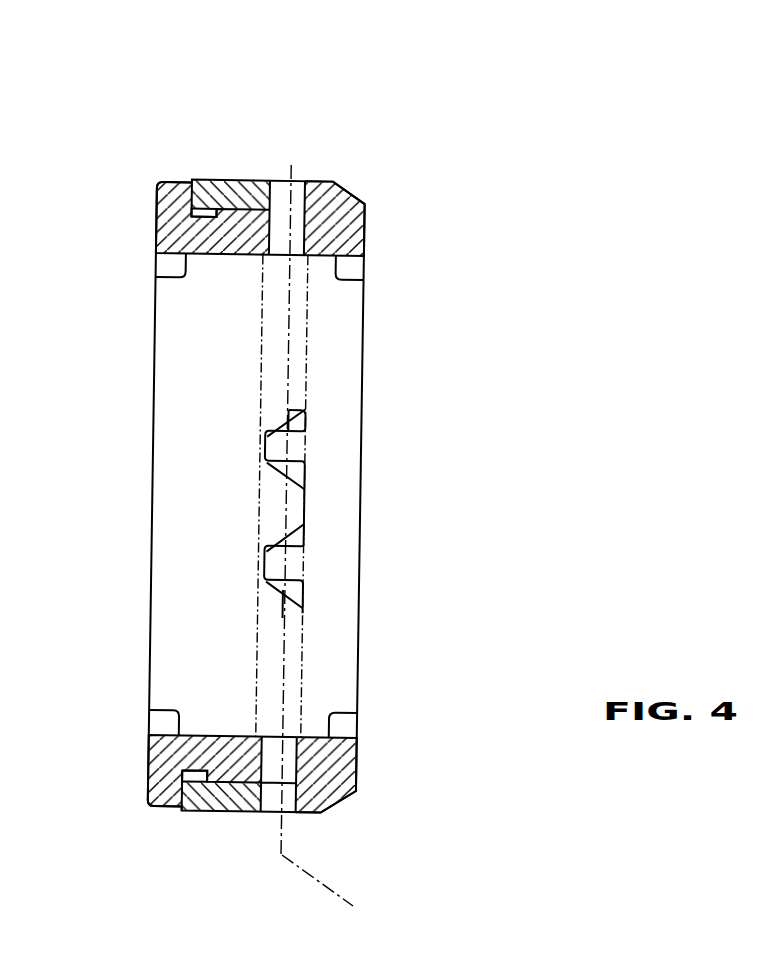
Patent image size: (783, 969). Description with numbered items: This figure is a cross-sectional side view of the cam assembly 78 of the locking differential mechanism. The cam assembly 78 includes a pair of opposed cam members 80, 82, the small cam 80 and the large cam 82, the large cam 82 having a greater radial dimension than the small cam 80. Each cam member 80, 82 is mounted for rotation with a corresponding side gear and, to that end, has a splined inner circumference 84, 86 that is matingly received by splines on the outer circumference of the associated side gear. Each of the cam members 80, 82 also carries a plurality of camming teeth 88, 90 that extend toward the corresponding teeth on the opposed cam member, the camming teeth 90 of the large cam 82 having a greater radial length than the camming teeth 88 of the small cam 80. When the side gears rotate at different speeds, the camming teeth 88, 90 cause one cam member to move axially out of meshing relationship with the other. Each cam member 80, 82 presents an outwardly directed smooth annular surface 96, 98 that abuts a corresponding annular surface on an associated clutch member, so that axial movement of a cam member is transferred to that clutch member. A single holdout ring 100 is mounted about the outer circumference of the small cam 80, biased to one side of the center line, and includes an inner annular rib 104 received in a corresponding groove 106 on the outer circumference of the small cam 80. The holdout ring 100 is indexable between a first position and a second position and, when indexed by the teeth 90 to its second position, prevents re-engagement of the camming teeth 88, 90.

The cam assembly 78 is at (413, 160).
The cam member 80 is at (217, 254).
The cam member 82 is at (322, 260).
The splined inner circumference 84 is at (163, 265).
The splined inner circumference 86 is at (360, 267).
The camming teeth 88 is at (297, 505).
The camming teeth 90 is at (303, 181).
The smooth annular surface 96 is at (157, 222).
The smooth annular surface 98 is at (365, 232).
The holdout ring 100 is at (242, 182).
The inner annular rib 104 is at (220, 183).
The groove 106 is at (196, 767).